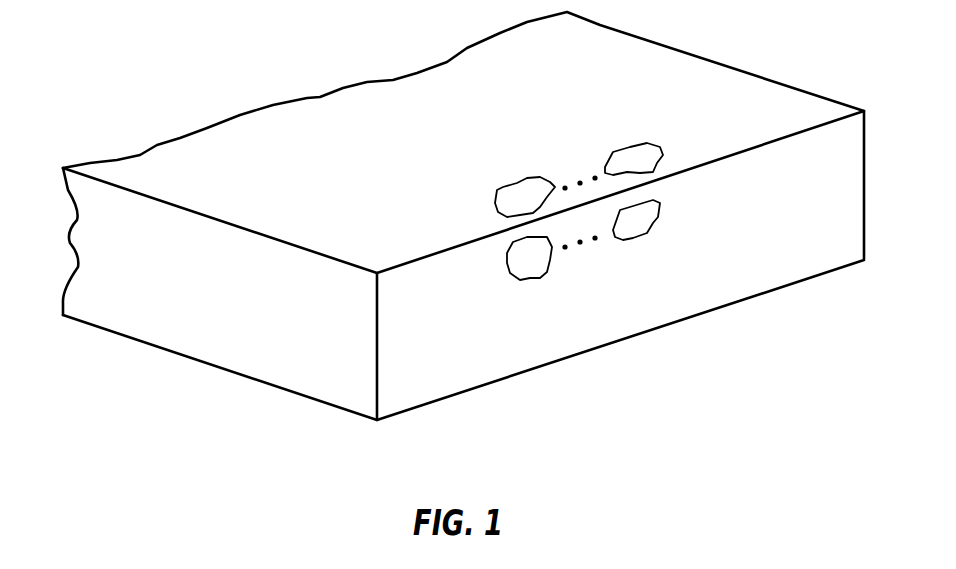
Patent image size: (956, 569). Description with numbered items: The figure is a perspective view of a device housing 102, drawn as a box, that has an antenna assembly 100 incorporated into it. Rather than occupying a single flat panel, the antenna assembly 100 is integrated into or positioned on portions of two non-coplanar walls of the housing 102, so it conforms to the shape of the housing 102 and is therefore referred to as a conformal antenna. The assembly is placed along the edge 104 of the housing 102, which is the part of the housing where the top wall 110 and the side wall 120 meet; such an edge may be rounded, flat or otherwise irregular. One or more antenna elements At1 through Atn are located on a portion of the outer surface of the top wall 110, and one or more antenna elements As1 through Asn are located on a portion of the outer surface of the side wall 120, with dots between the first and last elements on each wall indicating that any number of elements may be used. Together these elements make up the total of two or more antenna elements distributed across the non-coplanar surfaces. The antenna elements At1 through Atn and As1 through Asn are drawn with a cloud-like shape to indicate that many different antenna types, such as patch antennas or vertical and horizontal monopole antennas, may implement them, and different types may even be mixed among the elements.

The antenna assembly 100 is at (568, 158).
The housing 102 is at (688, 48).
The edge 104 is at (432, 253).
The top wall 110 is at (751, 90).
The side wall 120 is at (757, 278).
The antenna element At1 is at (517, 190).
The antenna element Atn is at (633, 147).
The antenna element As1 is at (530, 268).
The antenna element Asn is at (633, 233).